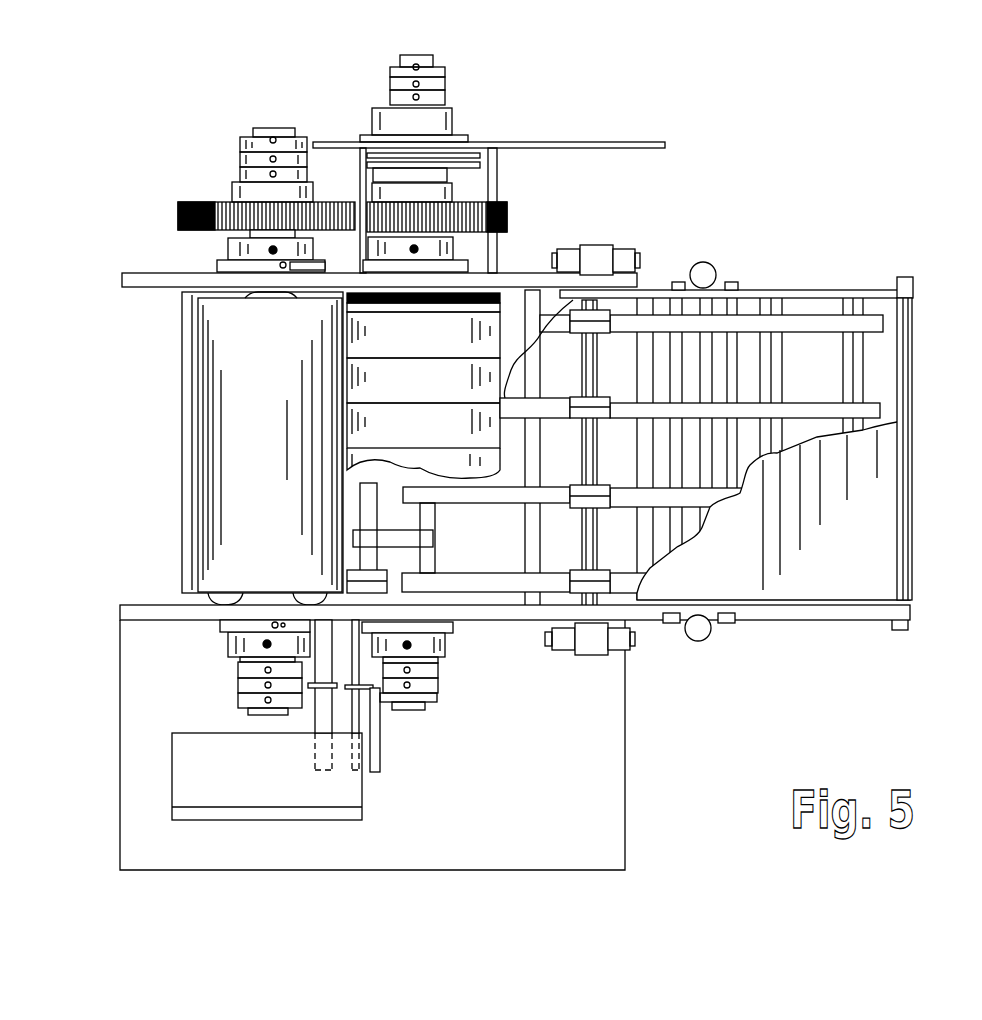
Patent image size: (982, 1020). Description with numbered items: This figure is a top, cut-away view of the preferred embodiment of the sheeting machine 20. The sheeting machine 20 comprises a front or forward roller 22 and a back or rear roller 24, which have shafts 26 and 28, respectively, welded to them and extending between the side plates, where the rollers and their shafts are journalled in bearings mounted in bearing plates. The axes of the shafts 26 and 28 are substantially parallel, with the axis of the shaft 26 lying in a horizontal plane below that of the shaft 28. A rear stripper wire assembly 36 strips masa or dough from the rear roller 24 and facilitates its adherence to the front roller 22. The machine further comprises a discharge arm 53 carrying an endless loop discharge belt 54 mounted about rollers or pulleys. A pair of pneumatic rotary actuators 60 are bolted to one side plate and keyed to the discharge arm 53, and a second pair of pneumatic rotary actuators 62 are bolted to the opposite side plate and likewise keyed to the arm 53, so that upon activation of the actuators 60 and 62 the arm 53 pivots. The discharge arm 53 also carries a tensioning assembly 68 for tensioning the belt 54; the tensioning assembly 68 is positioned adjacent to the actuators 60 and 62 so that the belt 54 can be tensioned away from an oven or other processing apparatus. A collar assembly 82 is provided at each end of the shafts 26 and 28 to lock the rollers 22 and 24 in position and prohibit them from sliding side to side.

The sheeting machine 20 is at (105, 573).
The front roller 22 is at (437, 343).
The rear roller 24 is at (198, 423).
The shaft 26 is at (407, 712).
The shaft 28 is at (268, 128).
The rear stripper wire assembly 36 is at (338, 256).
The discharge arm 53 is at (822, 282).
The discharge belt 54 is at (895, 458).
The pneumatic rotary actuators 60 is at (593, 245).
The pneumatic rotary actuators 62 is at (593, 655).
The tensioning assembly 68 is at (716, 260).
The collar assembly 82 is at (220, 155).